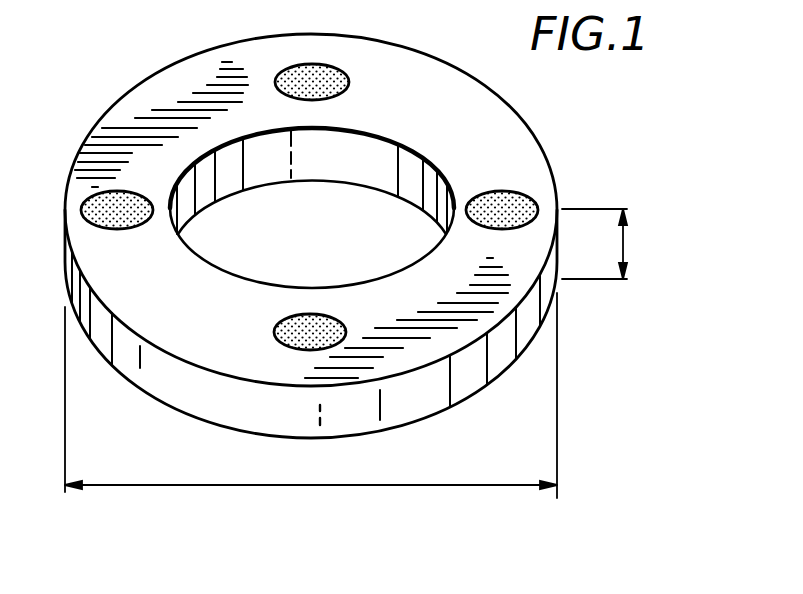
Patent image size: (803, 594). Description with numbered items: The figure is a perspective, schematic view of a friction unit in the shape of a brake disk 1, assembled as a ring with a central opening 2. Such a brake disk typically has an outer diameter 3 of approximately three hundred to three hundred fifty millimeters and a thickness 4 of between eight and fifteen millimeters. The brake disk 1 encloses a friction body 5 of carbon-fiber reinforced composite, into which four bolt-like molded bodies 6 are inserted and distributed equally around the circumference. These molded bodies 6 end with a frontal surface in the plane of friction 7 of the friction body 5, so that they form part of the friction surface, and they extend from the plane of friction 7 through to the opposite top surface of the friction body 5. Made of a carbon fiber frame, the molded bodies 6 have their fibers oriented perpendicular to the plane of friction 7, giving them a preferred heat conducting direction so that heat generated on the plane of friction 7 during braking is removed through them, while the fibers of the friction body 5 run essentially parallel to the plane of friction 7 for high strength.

The brake disk 1 is at (262, 34).
The central opening 2 is at (362, 202).
The outer diameter 3 is at (311, 406).
The thickness 4 is at (607, 244).
The friction body 5 is at (537, 163).
The molded bodies 6 is at (331, 79).
The plane of friction 7 is at (155, 101).